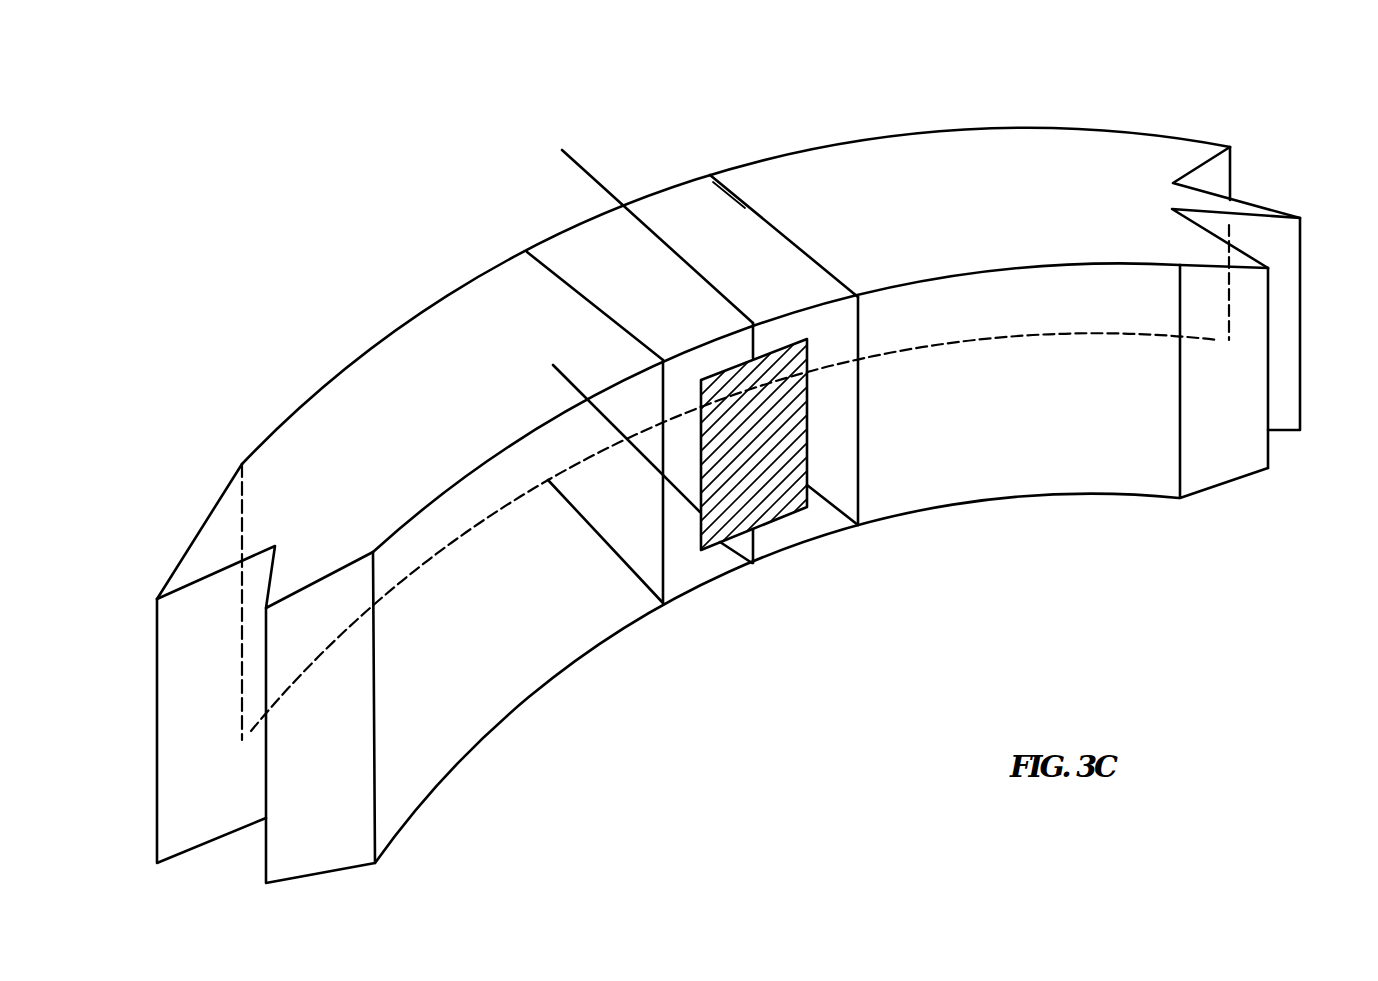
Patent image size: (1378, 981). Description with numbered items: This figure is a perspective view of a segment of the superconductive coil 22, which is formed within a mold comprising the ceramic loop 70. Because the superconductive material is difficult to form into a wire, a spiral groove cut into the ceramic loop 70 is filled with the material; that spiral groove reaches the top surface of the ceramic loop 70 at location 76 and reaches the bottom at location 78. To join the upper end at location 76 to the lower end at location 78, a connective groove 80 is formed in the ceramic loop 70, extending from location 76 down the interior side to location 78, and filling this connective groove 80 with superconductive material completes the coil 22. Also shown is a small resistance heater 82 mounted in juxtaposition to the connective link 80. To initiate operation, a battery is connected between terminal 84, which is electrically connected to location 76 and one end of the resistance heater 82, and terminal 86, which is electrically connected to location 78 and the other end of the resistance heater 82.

The coil 22 is at (1333, 123).
The ceramic loop 70 is at (1068, 128).
The location 76 is at (827, 268).
The location 78 is at (580, 517).
The connective groove 80 is at (685, 595).
The resistance heater 82 is at (783, 517).
The terminal 84 is at (610, 192).
The terminal 86 is at (565, 383).